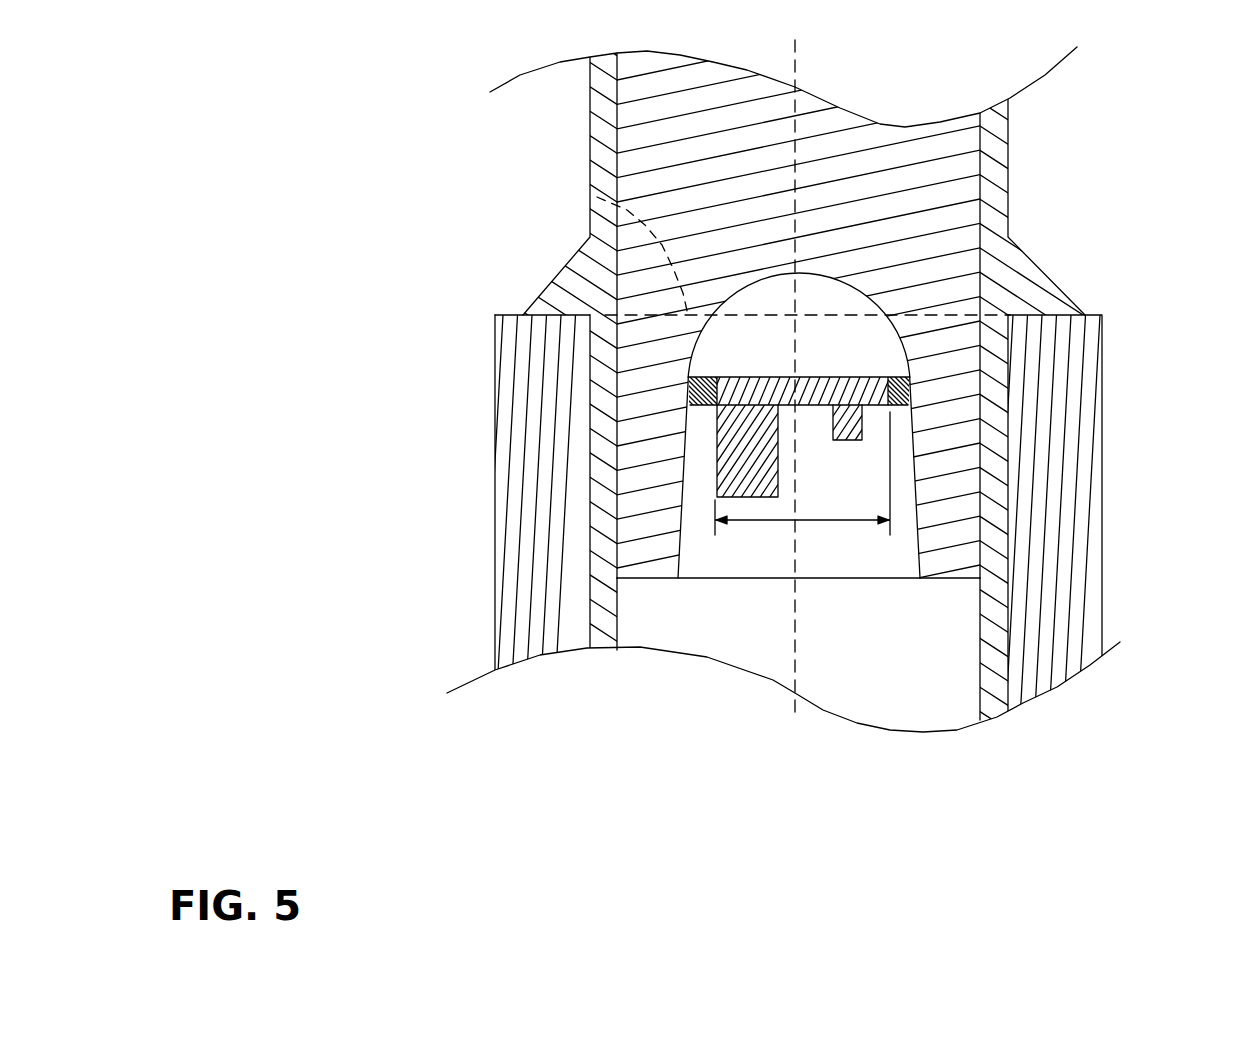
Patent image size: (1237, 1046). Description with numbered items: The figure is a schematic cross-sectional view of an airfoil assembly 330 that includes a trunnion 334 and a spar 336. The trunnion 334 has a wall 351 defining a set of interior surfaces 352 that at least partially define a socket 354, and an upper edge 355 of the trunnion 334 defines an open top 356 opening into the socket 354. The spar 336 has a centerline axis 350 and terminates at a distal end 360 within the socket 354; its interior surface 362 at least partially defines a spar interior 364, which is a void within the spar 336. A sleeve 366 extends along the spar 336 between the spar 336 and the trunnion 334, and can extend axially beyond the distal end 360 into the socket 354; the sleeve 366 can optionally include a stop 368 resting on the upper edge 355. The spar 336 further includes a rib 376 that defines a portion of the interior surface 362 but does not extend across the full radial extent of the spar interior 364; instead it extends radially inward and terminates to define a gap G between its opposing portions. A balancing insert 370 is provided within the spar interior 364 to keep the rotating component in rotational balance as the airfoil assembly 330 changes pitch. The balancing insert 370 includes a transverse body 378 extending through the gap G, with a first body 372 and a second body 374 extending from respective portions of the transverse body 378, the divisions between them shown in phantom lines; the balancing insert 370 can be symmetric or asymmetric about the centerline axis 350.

The airfoil assembly 330 is at (292, 150).
The trunnion 334 is at (493, 582).
The spar 336 is at (610, 110).
The centerline axis 350 is at (800, 67).
The wall 351 is at (496, 650).
The set of interior surfaces 352 is at (590, 593).
The socket 354 is at (856, 688).
The upper edge 355 is at (505, 312).
The open top 356 is at (597, 197).
The distal end 360 is at (953, 580).
The interior surface 362 is at (913, 547).
The spar interior 364 is at (890, 527).
The sleeve 366 is at (1018, 224).
The stop 368 is at (1060, 290).
The balancing insert 370 is at (787, 412).
The first body 372 is at (716, 452).
The second body 374 is at (864, 418).
The rib 376 is at (686, 392).
The transverse body 378 is at (857, 377).
The gap G is at (773, 522).